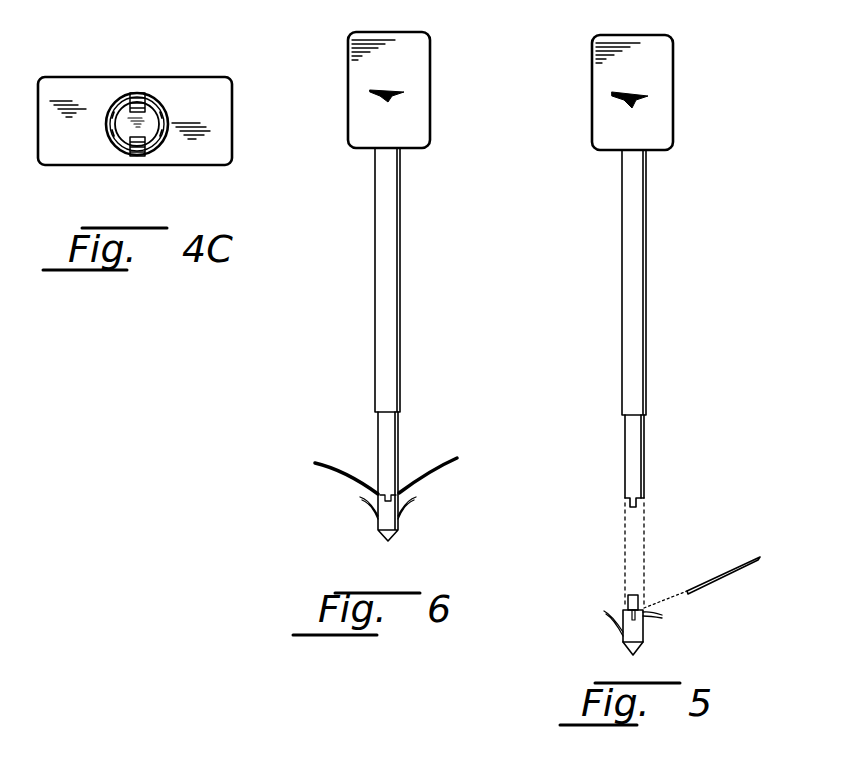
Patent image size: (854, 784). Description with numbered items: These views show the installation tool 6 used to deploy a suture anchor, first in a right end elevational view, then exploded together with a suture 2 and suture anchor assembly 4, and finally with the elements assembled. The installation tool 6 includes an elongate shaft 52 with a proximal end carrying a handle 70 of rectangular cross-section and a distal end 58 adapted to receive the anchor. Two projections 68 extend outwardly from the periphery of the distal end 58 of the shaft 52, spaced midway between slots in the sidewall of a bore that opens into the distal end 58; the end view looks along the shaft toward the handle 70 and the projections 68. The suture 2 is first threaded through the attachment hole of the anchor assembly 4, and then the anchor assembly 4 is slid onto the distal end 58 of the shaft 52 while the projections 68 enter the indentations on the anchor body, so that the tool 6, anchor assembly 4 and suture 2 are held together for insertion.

In FIG. 6, the suture 2 is at (432, 473).
In FIG. 5, the suture 2 is at (723, 573).
In FIG. 6, the suture anchor assembly 4 is at (399, 512).
In FIG. 5, the suture anchor assembly 4 is at (644, 637).
In FIG. 6, the installation tool 6 is at (410, 330).
In FIG. 5, the installation tool 6 is at (660, 270).
In FIG. 5, the elongate shaft 52 is at (641, 320).
In FIG. 5, the distal end 58 is at (645, 508).
In FIG. 4C, the projections 68 is at (138, 93).
In FIG. 4C, the handle 70 is at (190, 84).